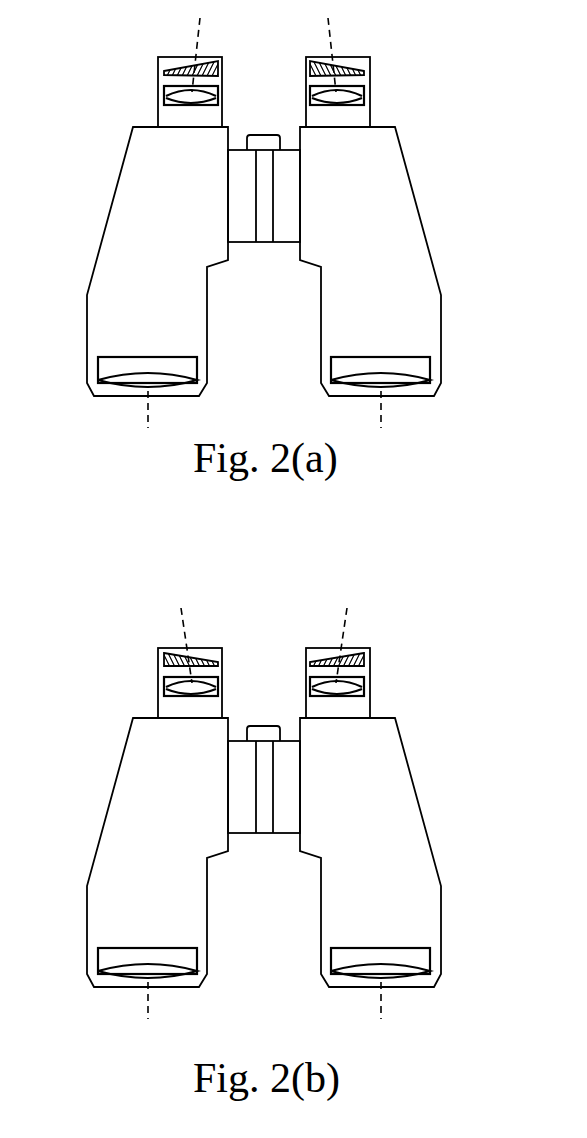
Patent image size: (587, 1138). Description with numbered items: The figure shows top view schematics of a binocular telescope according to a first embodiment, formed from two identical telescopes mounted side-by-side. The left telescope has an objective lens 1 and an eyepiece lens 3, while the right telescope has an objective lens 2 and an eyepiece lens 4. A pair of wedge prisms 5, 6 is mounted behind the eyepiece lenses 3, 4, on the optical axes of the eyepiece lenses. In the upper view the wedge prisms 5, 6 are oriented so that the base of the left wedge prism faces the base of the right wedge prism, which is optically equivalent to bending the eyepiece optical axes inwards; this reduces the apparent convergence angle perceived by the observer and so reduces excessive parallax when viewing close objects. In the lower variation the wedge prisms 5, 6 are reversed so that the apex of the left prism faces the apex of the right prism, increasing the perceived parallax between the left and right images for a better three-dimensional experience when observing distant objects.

In FIG. 2A, the objective lens 1 is at (98, 375).
In FIG. 2B, the objective lens 1 is at (120, 949).
In FIG. 2A, the objective lens 2 is at (430, 368).
In FIG. 2B, the objective lens 2 is at (408, 949).
In FIG. 2A, the eyepiece lens 3 is at (164, 95).
In FIG. 2B, the eyepiece lens 3 is at (162, 703).
In FIG. 2A, the eyepiece lens 4 is at (364, 95).
In FIG. 2B, the eyepiece lens 4 is at (366, 703).
In FIG. 2A, the wedge prism 5 is at (164, 73).
In FIG. 2B, the wedge prism 5 is at (164, 674).
In FIG. 2A, the wedge prism 6 is at (364, 73).
In FIG. 2B, the wedge prism 6 is at (366, 674).